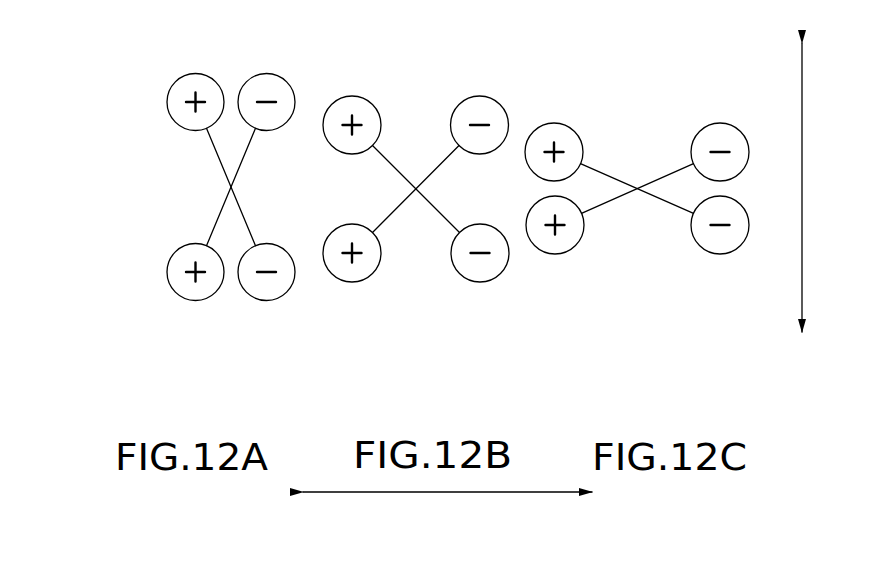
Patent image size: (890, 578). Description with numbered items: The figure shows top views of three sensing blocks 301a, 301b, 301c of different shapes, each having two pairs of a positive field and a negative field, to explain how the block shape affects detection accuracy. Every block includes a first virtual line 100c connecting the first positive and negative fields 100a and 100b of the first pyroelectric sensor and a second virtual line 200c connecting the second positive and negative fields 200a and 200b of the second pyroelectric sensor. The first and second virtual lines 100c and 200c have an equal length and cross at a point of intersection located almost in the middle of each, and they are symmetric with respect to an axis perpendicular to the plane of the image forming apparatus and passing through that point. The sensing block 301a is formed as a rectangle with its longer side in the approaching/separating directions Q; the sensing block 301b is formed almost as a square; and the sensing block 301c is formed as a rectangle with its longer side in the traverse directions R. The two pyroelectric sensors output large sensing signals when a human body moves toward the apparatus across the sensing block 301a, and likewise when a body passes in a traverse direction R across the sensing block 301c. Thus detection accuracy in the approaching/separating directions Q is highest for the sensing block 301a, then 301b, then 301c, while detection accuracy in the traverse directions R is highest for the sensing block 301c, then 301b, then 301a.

In FIG. 12A, the first positive field 100a is at (177, 299).
In FIG. 12B, the first positive field 100a is at (351, 282).
In FIG. 12C, the first positive field 100a is at (560, 254).
In FIG. 12A, the first negative field 100b is at (278, 74).
In FIG. 12B, the first negative field 100b is at (485, 96).
In FIG. 12C, the first negative field 100b is at (728, 123).
In FIG. 12A, the first virtual line 100c is at (215, 218).
In FIG. 12B, the first virtual line 100c is at (395, 213).
In FIG. 12C, the first virtual line 100c is at (615, 200).
In FIG. 12A, the second positive field 200a is at (183, 74).
In FIG. 12B, the second positive field 200a is at (355, 96).
In FIG. 12C, the second positive field 200a is at (565, 123).
In FIG. 12A, the second negative field 200b is at (268, 300).
In FIG. 12B, the second negative field 200b is at (480, 282).
In FIG. 12C, the second negative field 200b is at (721, 254).
In FIG. 12A, the second virtual line 200c is at (248, 225).
In FIG. 12B, the second virtual line 200c is at (397, 162).
In FIG. 12C, the second virtual line 200c is at (608, 172).
In FIG. 12A, the sensing block 301a is at (132, 285).
In FIG. 12B, the sensing block 301b is at (435, 343).
In FIG. 12C, the sensing block 301c is at (665, 308).
In FIG. 12C, the approaching/separating directions Q is at (803, 145).
In FIG. 12B, the traverse directions R is at (482, 493).